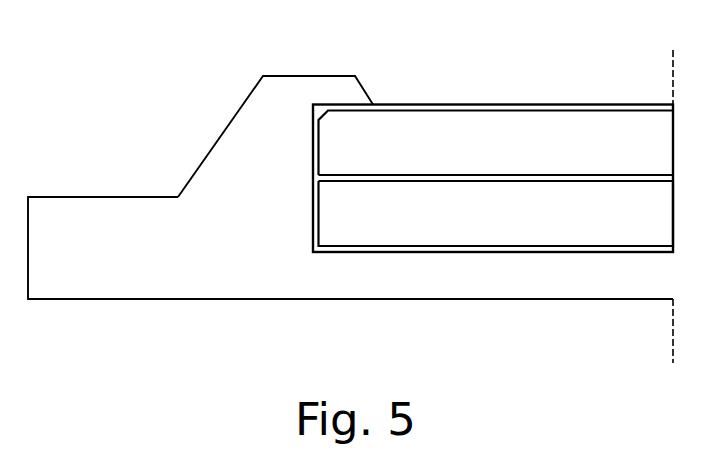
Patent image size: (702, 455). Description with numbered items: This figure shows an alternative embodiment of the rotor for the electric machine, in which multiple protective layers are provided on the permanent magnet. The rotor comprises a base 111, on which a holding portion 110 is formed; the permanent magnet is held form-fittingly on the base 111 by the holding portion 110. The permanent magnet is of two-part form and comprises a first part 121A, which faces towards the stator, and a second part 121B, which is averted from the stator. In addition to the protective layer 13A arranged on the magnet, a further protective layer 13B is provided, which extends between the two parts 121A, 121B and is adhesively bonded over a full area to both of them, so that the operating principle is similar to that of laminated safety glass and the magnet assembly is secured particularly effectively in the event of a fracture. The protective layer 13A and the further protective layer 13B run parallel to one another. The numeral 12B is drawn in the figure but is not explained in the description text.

The holding portion 110 is at (245, 143).
The base 111 is at (142, 286).
The first part 121A is at (402, 122).
The protective layer 13A is at (513, 105).
The further protective layer 13B is at (628, 174).
The second substrate 12B is at (442, 235).
The second part 121B is at (568, 234).